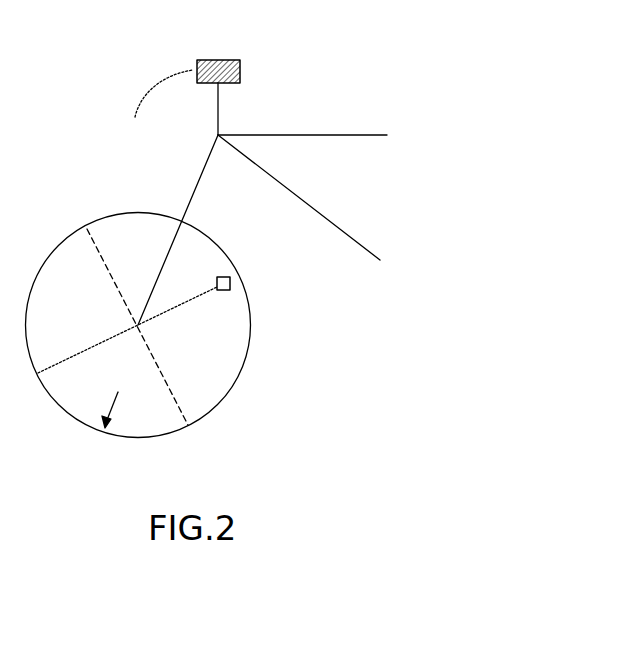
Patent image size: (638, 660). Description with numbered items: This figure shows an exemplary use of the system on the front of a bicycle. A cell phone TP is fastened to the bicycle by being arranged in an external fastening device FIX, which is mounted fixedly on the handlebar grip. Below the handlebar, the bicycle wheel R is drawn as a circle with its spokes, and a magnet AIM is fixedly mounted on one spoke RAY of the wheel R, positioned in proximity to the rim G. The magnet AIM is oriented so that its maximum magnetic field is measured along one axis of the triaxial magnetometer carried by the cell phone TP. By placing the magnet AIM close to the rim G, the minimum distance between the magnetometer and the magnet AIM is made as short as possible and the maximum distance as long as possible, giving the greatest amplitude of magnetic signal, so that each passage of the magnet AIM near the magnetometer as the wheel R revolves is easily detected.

The cell phone TP is at (218, 72).
The external fastening device FIX is at (197, 62).
The wheel R is at (152, 437).
The spoke RAY is at (177, 306).
The magnet AIM is at (230, 283).
The rim G is at (115, 397).